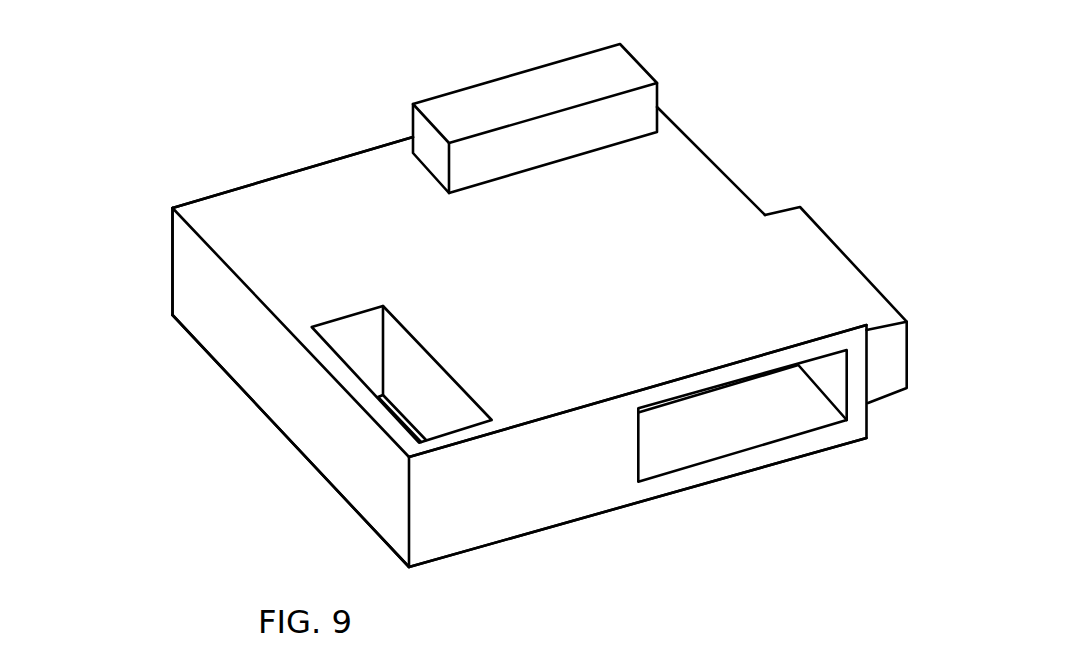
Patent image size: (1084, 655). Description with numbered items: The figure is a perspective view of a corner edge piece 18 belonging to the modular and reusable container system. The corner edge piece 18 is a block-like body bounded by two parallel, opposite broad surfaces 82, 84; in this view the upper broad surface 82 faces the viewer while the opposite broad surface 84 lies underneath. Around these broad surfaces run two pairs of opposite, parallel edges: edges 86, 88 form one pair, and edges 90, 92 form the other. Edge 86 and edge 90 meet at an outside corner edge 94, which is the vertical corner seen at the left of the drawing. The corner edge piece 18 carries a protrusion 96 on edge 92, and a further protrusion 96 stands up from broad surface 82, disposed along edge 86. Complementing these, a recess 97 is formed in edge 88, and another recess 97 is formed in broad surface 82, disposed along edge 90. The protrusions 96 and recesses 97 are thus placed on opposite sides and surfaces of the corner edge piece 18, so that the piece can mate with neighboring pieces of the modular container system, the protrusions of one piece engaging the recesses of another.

The corner edge piece 18 is at (205, 90).
The broad surface 82 is at (722, 210).
The broad surface 84 is at (520, 537).
The edge 86 is at (337, 157).
The edge 88 is at (602, 480).
The edge 90 is at (247, 350).
The edge 92 is at (367, 362).
The outside corner edge 94 is at (172, 252).
The protrusion 96 is at (630, 65).
The recess 97 is at (793, 420).